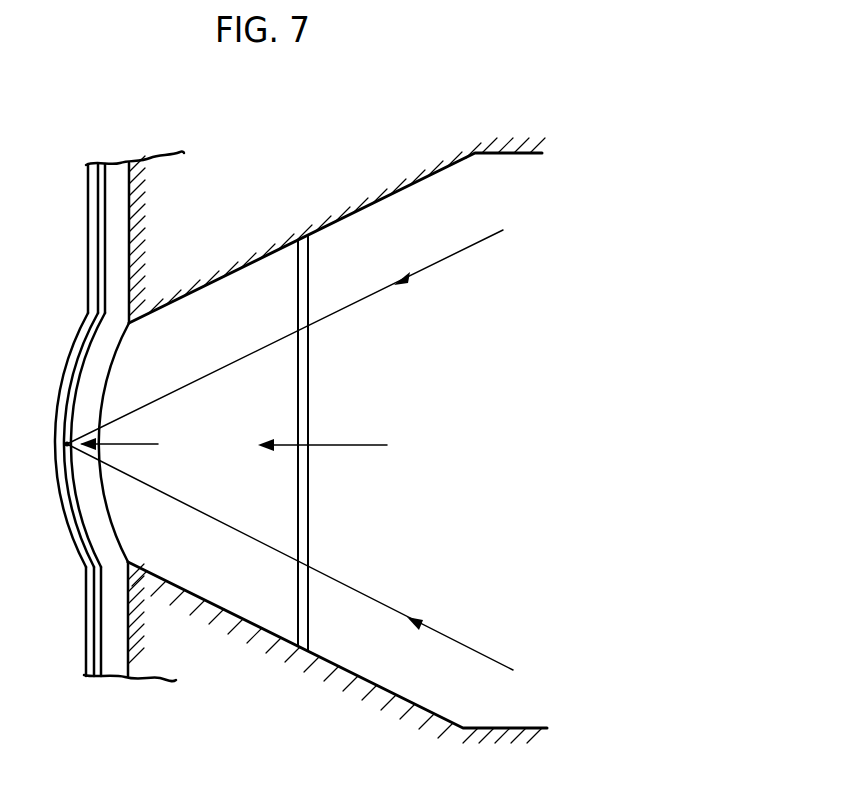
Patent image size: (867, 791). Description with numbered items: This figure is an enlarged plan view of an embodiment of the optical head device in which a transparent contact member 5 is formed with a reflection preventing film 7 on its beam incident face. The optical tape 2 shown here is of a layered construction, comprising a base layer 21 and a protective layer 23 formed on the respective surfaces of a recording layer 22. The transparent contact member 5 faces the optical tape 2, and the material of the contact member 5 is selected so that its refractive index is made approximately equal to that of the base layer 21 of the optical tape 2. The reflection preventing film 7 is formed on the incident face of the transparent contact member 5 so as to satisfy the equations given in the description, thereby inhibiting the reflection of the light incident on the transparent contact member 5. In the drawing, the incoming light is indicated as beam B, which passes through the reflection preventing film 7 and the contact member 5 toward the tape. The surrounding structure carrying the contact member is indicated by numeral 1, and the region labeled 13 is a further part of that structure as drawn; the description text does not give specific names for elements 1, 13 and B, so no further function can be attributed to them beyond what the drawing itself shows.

The optical device housing 1 is at (230, 178).
The optical tape 2 is at (163, 74).
The base layer 21 is at (118, 172).
The recording layer 22 is at (101, 172).
The protective layer 23 is at (92, 165).
The upper conical wall 13 is at (402, 212).
The transparent contact member 5 is at (242, 600).
The reflection preventing film 7 is at (310, 596).
The light beam B is at (458, 253).